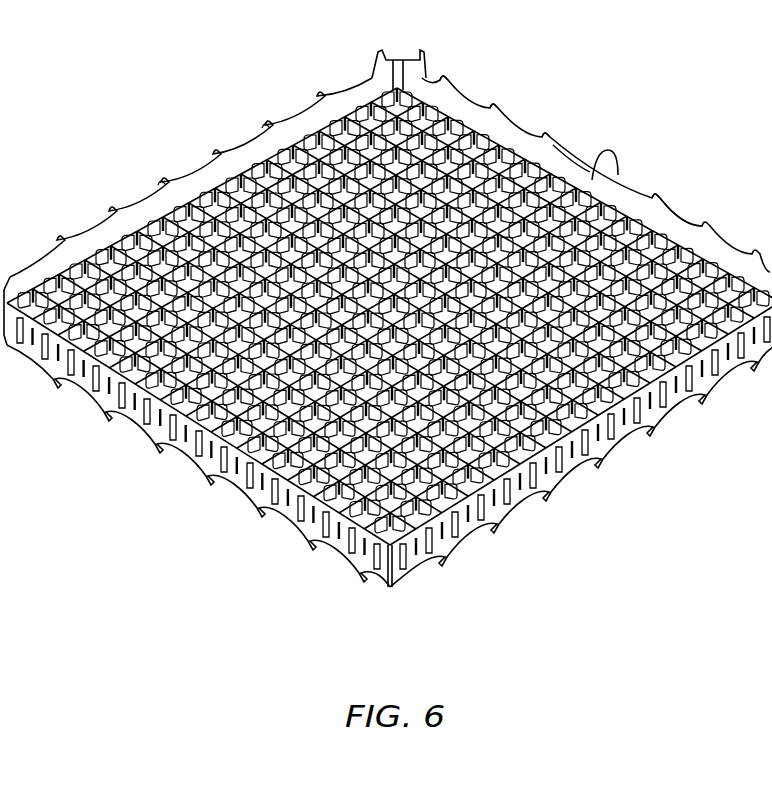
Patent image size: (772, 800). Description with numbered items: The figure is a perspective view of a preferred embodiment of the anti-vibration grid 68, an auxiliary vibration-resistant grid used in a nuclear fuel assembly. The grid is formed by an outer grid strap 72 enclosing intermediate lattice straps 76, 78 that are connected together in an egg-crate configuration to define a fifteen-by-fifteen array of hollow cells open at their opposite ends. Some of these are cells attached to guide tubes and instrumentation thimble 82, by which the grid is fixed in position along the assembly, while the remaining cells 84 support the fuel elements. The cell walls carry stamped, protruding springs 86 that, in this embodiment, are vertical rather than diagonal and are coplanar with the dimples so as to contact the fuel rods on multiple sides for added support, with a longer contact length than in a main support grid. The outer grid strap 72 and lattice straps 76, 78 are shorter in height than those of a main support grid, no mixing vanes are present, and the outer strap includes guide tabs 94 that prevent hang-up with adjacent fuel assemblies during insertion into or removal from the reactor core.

The anti-vibration grid 68 is at (296, 48).
The outer grid strap 72 is at (716, 378).
The lattice strap 76 is at (589, 168).
The lattice strap 78 is at (669, 227).
The cells attached to guide tubes and instrumentation thimble 82 is at (262, 127).
The remaining cells 84 is at (530, 138).
The spring 86 is at (247, 470).
The guide tabs 94 is at (629, 147).